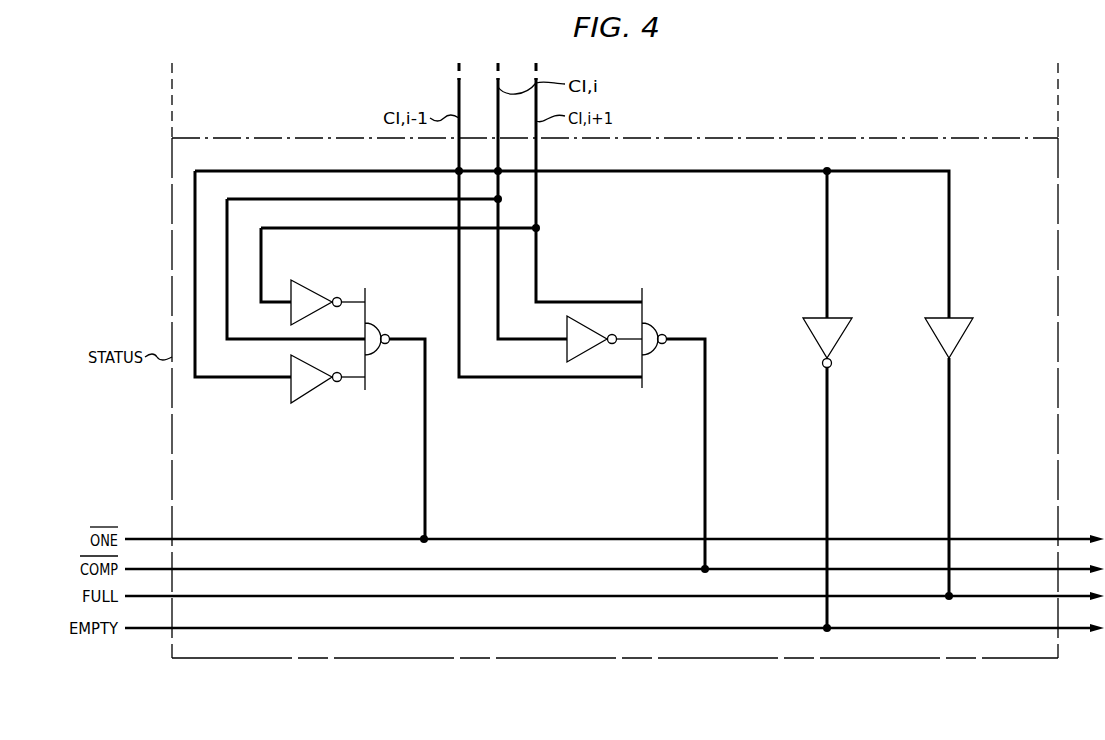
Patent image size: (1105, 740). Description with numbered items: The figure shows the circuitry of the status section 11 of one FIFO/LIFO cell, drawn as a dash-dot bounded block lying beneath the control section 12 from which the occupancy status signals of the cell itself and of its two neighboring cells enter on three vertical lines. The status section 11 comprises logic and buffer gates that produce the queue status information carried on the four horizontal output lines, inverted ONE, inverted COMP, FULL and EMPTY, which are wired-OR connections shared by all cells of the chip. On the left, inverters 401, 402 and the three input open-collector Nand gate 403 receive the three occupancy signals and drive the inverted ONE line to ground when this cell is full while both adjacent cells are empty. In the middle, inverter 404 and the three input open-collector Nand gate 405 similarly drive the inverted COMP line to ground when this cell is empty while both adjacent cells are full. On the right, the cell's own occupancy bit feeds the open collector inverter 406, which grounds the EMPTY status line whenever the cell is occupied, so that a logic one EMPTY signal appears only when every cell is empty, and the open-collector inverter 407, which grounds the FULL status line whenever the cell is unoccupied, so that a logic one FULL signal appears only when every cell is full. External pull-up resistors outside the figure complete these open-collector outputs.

The status section 11 is at (1058, 363).
The control section 12 is at (1058, 121).
The inverter 401 is at (318, 401).
The inverter 402 is at (310, 280).
The three input open-collector Nand gate 403 is at (378, 357).
The inverter 404 is at (565, 326).
The three input open-collector Nand gate 405 is at (655, 357).
The open collector inverter 406 is at (843, 345).
The open-collector inverter 407 is at (965, 345).